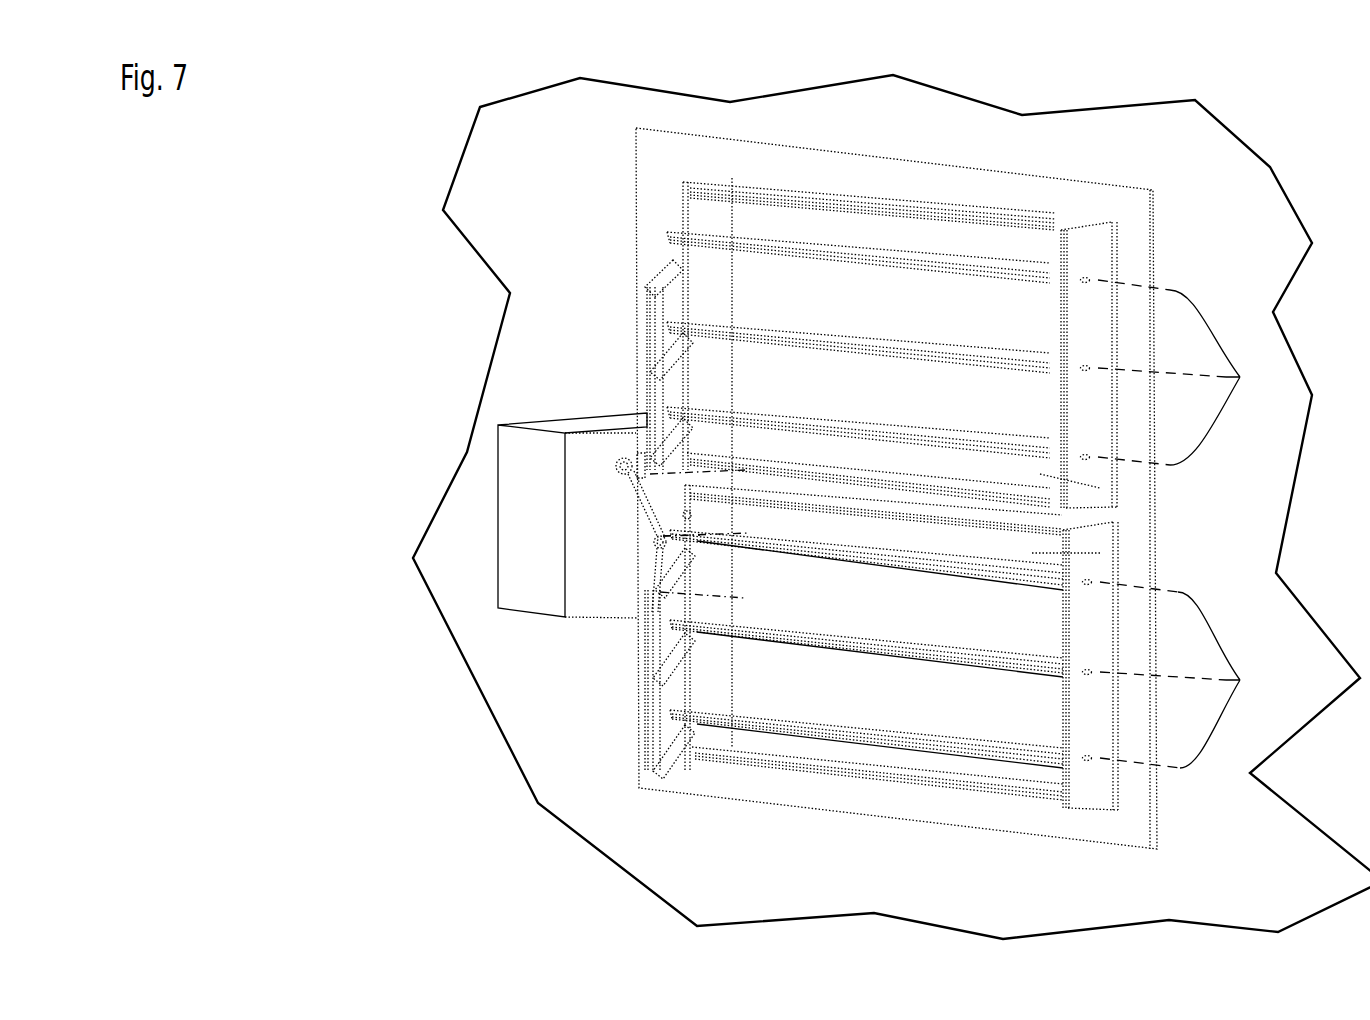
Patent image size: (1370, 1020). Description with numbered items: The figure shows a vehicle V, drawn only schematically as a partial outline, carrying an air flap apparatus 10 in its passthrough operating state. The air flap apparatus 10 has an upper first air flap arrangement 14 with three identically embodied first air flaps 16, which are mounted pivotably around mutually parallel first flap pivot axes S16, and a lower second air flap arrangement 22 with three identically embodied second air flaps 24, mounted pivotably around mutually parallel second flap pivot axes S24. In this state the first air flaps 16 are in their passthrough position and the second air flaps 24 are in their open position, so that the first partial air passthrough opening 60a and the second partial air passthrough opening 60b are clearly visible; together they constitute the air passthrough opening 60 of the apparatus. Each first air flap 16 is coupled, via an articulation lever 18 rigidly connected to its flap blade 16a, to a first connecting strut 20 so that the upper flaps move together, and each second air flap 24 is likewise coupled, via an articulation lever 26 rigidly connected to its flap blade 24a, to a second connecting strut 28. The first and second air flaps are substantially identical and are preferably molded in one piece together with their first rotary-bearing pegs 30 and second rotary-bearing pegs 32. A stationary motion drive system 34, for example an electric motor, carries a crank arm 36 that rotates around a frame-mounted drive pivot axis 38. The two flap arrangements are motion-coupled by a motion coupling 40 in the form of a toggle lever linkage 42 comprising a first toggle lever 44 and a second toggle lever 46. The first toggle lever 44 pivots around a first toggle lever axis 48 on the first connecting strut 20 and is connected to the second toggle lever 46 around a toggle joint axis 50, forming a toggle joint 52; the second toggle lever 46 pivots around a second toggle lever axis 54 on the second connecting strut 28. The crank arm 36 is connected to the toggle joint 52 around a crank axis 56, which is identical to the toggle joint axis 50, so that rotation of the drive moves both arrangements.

The vehicle V is at (462, 160).
The air flap apparatus 10 is at (556, 176).
The first air flap arrangement 14 is at (1045, 227).
The first air flaps 16 is at (858, 282).
The flap blade 16a is at (952, 270).
The articulation lever 18 is at (673, 266).
The first connecting strut 20 is at (647, 308).
The second air flap arrangement 22 is at (1058, 800).
The second air flaps 24 is at (866, 706).
The flap blade 24a is at (918, 568).
The articulation lever 26 is at (695, 555).
The second connecting strut 28 is at (652, 622).
The first rotary-bearing pegs 30 is at (1086, 286).
The second rotary-bearing pegs 32 is at (1088, 588).
The motion drive system 34 is at (545, 548).
The crank arm 36 is at (618, 468).
The drive pivot axis 38 is at (680, 483).
The motion coupling 40 is at (648, 541).
The toggle lever linkage 42 is at (660, 542).
The first toggle lever 44 is at (643, 460).
The second toggle lever 46 is at (663, 555).
The first toggle lever axis 48 is at (720, 472).
The toggle joint axis 50 is at (747, 533).
The toggle joint 52 is at (690, 514).
The second toggle lever axis 54 is at (730, 597).
The crank axis 56 is at (681, 535).
The air passthrough opening 60 is at (1146, 520).
The first partial air passthrough opening 60a is at (1046, 474).
The second partial air passthrough opening 60b is at (1047, 553).
The first flap pivot axes S16 is at (1191, 372).
The second flap pivot axes S24 is at (1193, 675).